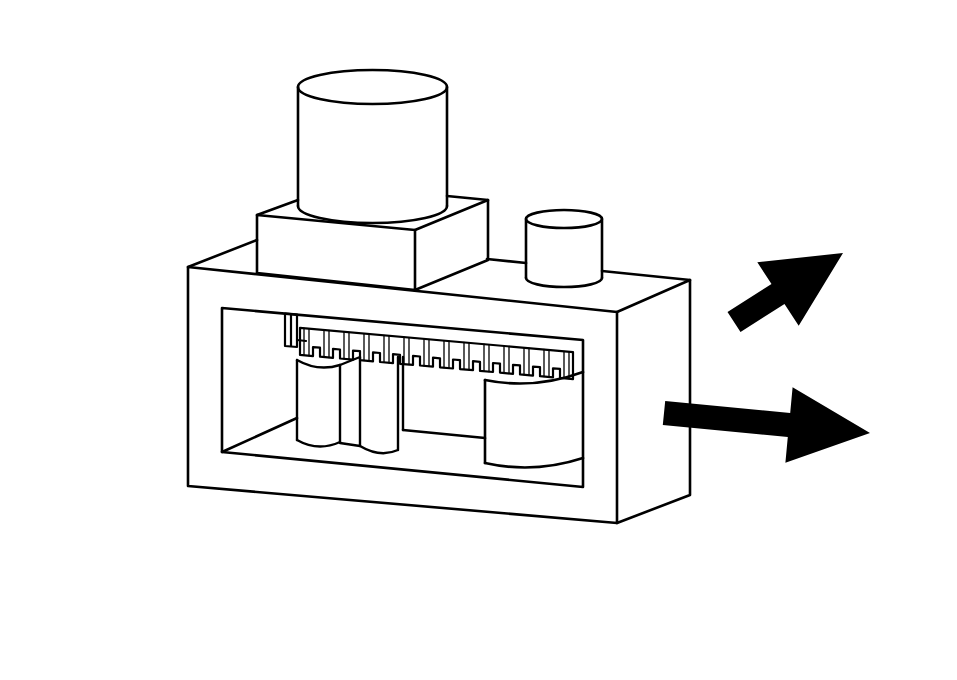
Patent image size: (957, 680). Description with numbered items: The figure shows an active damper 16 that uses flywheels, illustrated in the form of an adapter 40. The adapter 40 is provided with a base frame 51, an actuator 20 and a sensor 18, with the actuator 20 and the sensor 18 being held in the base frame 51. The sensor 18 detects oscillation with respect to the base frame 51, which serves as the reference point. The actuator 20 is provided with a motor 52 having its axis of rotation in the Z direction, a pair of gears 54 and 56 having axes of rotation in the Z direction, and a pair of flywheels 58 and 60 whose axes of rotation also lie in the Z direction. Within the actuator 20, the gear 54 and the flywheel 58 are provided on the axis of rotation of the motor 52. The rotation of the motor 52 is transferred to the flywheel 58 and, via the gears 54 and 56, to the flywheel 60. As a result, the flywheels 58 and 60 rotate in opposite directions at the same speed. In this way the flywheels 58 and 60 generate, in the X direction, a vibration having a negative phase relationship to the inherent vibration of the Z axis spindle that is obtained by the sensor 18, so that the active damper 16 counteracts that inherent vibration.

The active damper 16 is at (642, 105).
The sensor 18 is at (573, 245).
The actuator 20 is at (247, 177).
The adapter 40 is at (150, 320).
The base frame 51 is at (637, 283).
The motor 52 is at (425, 143).
The gear 54 is at (283, 343).
The gear 56 is at (450, 355).
The flywheel 58 is at (325, 428).
The flywheel 60 is at (520, 433).